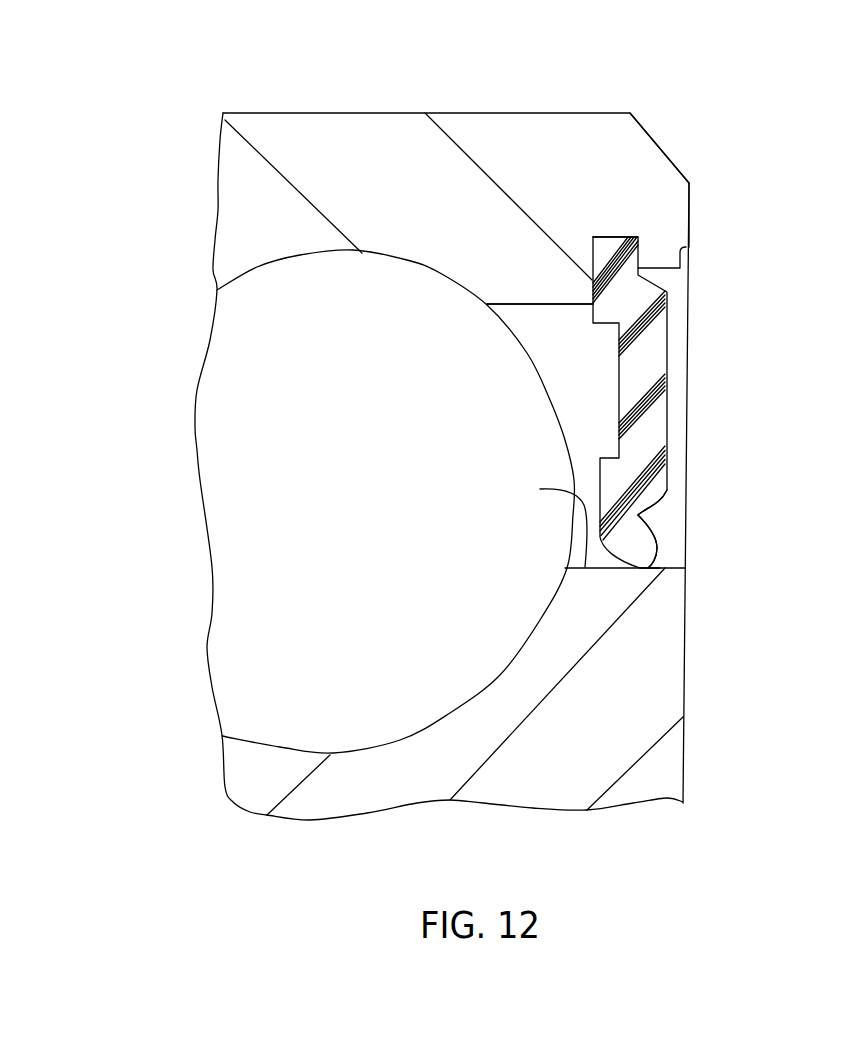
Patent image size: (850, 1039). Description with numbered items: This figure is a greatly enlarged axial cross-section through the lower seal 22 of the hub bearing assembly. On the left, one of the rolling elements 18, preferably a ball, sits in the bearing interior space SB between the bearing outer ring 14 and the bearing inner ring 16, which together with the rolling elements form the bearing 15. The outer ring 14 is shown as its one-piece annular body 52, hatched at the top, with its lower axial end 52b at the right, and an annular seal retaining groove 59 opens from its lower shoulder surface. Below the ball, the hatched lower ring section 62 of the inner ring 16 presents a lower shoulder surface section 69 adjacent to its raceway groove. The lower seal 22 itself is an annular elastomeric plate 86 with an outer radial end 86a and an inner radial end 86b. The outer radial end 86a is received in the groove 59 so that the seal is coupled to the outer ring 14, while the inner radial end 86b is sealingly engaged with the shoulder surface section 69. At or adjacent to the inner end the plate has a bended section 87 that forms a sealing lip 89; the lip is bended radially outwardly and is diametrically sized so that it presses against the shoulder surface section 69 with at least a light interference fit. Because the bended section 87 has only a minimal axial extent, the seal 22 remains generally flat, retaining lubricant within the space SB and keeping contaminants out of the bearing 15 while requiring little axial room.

The bearing outer ring 14 is at (516, 113).
The bearing 15 is at (680, 135).
The bearing inner ring 16 is at (683, 698).
The rolling elements 18 is at (227, 352).
The lower seal 22 is at (720, 417).
The annular body 52 is at (358, 124).
The lower axial end 52b is at (682, 211).
The seal retaining groove 59 is at (625, 237).
The lower ring section 62 is at (655, 657).
The lower shoulder surface section 69 is at (546, 522).
The annular elastomeric plate 86 is at (665, 363).
The outer radial end 86a is at (607, 252).
The inner radial end 86b is at (642, 547).
The bended section 87 is at (640, 513).
The sealing lip 89 is at (645, 573).
The bearing interior space SB is at (548, 342).